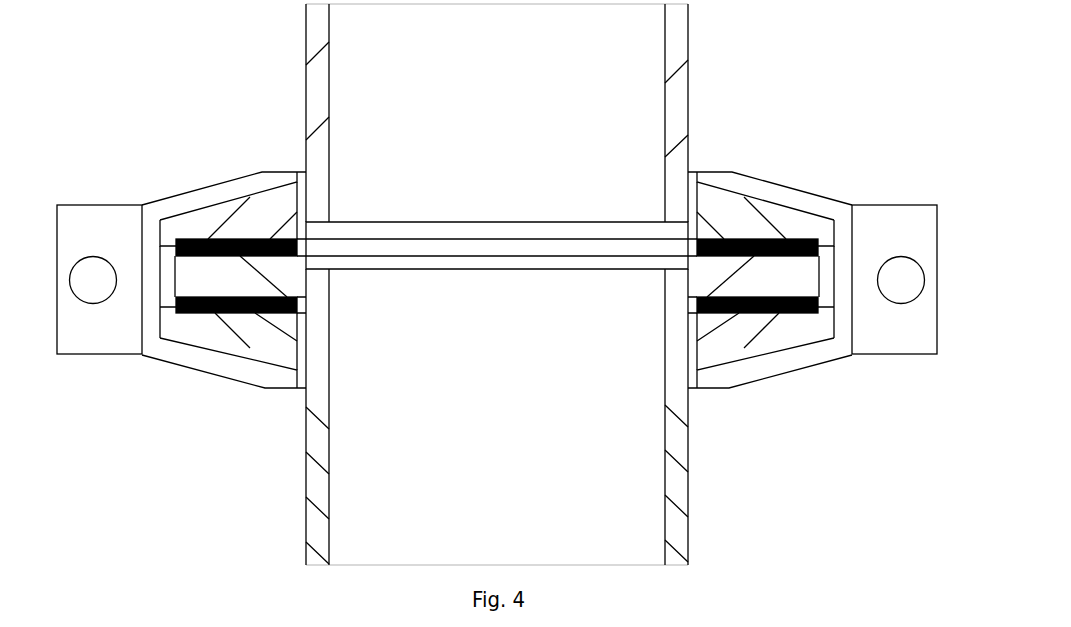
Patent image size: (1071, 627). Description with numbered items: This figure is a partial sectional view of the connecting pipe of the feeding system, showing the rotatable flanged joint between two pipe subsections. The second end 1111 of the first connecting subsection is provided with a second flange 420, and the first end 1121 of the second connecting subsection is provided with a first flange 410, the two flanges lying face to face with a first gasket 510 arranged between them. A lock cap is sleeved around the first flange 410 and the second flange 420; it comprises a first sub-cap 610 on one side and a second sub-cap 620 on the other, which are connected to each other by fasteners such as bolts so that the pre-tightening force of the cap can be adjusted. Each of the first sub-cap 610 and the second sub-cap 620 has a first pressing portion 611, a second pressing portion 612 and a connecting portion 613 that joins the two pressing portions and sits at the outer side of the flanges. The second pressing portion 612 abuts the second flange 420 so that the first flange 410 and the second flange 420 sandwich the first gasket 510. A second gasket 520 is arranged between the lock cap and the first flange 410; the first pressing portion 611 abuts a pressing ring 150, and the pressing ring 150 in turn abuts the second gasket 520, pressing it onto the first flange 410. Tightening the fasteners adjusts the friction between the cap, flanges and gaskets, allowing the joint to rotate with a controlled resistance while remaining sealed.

The second end of the first connecting subsection 1111 is at (675, 125).
The first end of the second connecting subsection 1121 is at (673, 432).
The first sub-cap 610 is at (179, 248).
The second pressing portion 612 is at (175, 207).
The first pressing portion 611 is at (190, 316).
The connecting portion 613 is at (146, 292).
The second sub-cap 620 is at (870, 223).
The second flange 420 is at (265, 212).
The first flange 410 is at (264, 316).
The first gasket 510 is at (233, 238).
The second gasket 520 is at (240, 316).
The pressing ring 150 is at (220, 316).